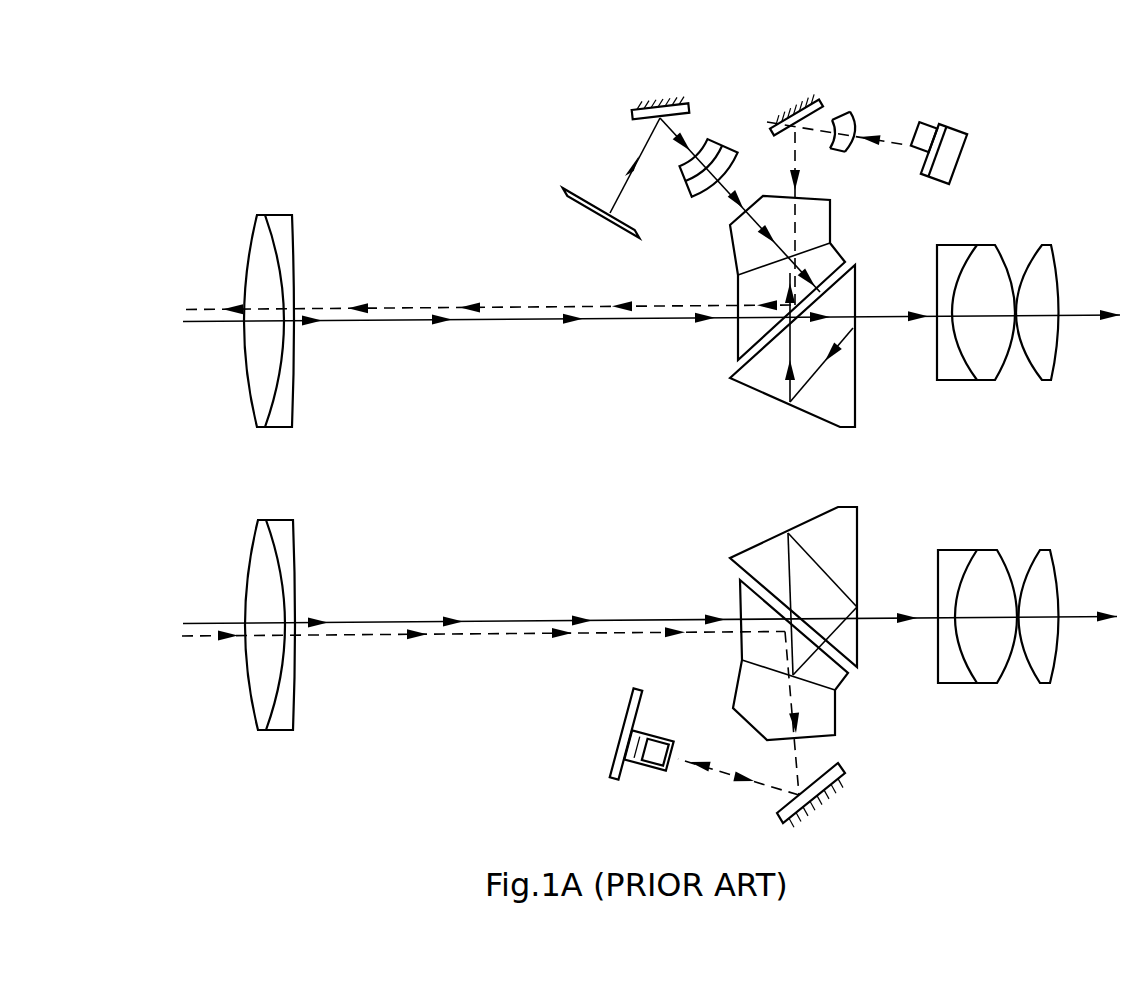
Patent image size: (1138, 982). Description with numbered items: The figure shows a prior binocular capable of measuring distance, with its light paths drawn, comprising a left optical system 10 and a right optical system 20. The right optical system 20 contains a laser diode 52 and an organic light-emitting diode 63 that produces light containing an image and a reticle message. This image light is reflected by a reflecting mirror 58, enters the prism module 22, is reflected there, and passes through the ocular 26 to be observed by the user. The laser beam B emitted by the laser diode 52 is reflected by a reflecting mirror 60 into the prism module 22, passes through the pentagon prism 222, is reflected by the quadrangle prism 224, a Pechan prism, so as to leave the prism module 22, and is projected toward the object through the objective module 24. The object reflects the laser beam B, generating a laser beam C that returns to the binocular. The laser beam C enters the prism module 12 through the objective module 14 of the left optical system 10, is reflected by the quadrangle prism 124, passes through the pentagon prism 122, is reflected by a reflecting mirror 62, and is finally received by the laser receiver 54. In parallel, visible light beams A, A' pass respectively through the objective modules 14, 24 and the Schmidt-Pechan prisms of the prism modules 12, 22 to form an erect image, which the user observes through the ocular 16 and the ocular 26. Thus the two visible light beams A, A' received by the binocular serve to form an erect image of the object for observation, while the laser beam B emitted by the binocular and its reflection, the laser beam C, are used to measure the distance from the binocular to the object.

The left optical system 10 is at (1038, 685).
The prism module 12 is at (730, 623).
The objective module 14 is at (284, 532).
The ocular 16 is at (1079, 616).
The right optical system 20 is at (1037, 231).
The prism module 22 is at (724, 292).
The objective module 24 is at (290, 228).
The ocular 26 is at (1030, 195).
The laser diode 52 is at (957, 130).
The laser receiver 54 is at (630, 764).
The reflecting mirror 58 is at (631, 109).
The reflecting mirror 60 is at (817, 98).
The reflecting mirror 62 is at (781, 812).
The organic light-emitting diode (OLED) 63 is at (566, 190).
The pentagon prism 122 is at (837, 720).
The quadrangle prism 124 is at (740, 651).
The pentagon prism 222 is at (812, 206).
The quadrangle prism (Pechan prism) 224 is at (824, 320).
The visible light beam A is at (650, 709).
The visible light beam A' is at (651, 376).
The laser beam B is at (408, 308).
The laser beam C is at (378, 637).